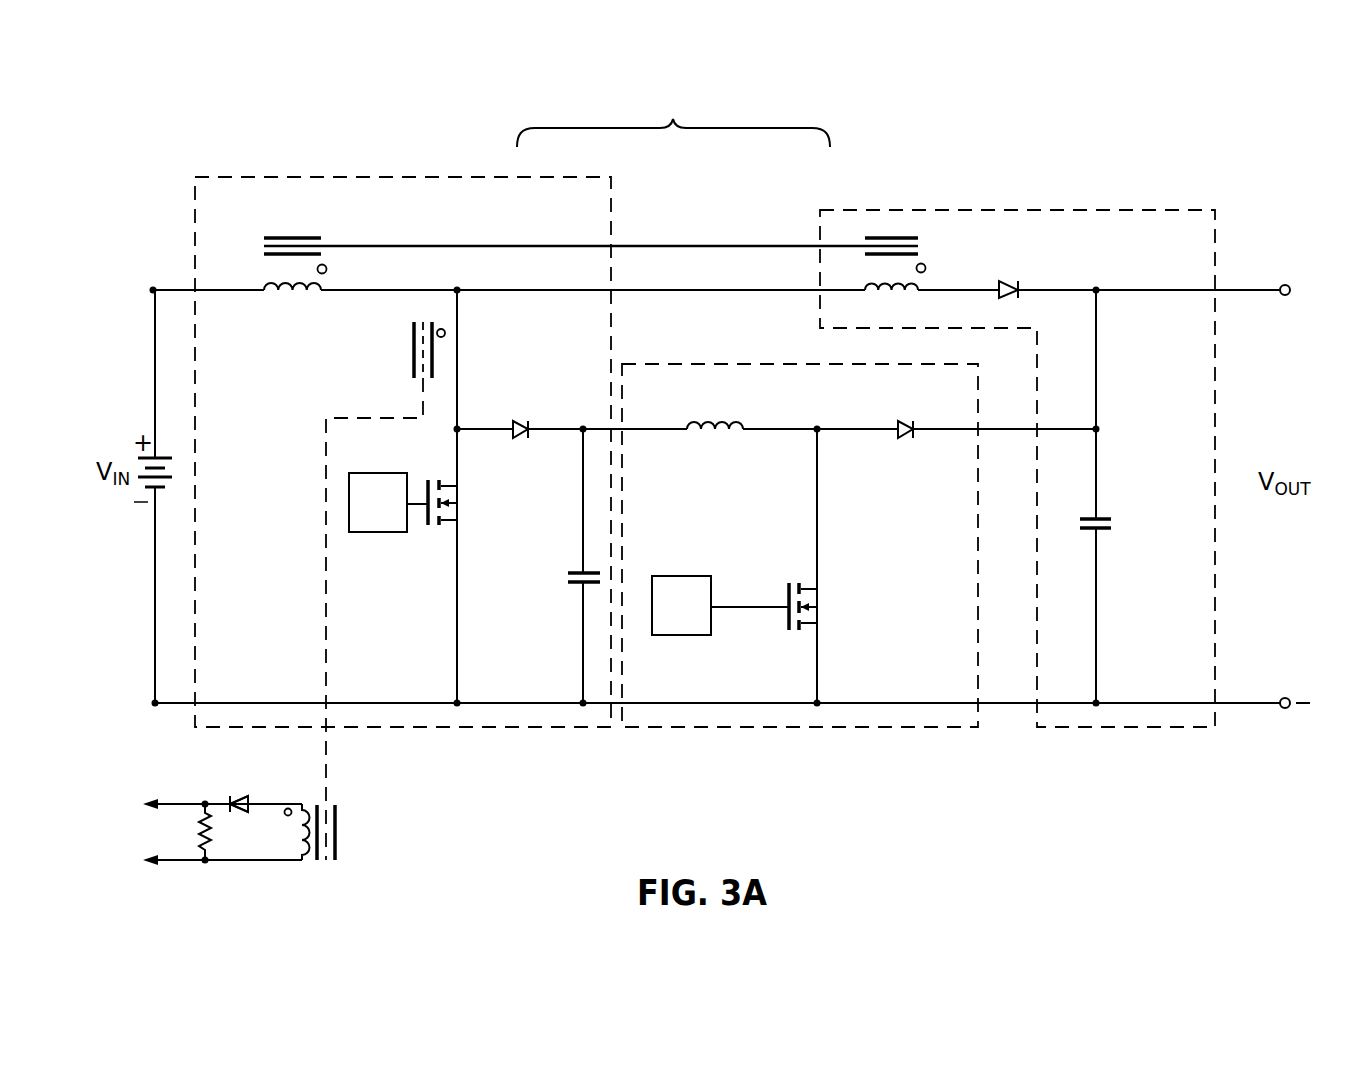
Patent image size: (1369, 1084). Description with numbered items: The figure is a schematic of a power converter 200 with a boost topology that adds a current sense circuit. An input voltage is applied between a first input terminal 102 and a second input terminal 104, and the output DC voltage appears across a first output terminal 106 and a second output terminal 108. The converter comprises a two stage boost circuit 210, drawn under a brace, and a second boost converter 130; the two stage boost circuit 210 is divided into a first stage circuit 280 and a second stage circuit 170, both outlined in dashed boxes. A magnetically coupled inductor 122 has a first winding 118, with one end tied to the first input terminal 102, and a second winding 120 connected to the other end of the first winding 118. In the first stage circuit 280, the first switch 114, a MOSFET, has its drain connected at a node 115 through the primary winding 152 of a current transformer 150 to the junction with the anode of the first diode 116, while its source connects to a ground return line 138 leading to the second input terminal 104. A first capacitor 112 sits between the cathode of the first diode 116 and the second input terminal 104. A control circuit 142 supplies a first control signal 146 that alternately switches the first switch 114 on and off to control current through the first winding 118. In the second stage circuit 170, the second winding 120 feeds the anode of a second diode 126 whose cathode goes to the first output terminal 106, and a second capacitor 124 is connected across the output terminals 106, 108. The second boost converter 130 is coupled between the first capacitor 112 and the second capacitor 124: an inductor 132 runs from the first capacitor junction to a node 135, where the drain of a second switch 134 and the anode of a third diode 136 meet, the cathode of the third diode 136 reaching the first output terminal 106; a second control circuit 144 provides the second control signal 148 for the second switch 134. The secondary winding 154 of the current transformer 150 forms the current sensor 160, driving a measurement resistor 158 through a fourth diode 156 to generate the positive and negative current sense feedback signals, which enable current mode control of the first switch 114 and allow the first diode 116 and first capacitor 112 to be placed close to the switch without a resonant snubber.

The first input terminal 102 is at (150, 290).
The second input terminal 104 is at (152, 703).
The first output terminal 106 is at (1284, 284).
The second output terminal 108 is at (1284, 698).
The first capacitor 112 is at (577, 572).
The first switch 114 is at (462, 501).
The node 115 is at (456, 286).
The first diode 116 is at (522, 422).
The first winding 118 is at (300, 295).
The second winding 120 is at (928, 284).
The magnetically coupled inductor 122 is at (365, 246).
The second capacitor 124 is at (1100, 517).
The second diode 126 is at (1024, 285).
The second boost converter 130 is at (770, 728).
The inductor 132 is at (713, 436).
The second switch 134 is at (820, 607).
The node 135 is at (816, 425).
The third diode 136 is at (905, 420).
The ground return line 138 is at (455, 701).
The control circuit 142 is at (370, 473).
The second control circuit 144 is at (672, 576).
The first control signal 146 is at (414, 500).
The second control signal 148 is at (754, 606).
The current transformer 150 is at (326, 864).
The primary winding 152 is at (448, 356).
The secondary winding 154 is at (292, 838).
The fourth diode 156 is at (250, 798).
The measurement resistor 158 is at (199, 832).
The current sensor 160 is at (246, 862).
The second stage circuit 170 is at (822, 210).
The power converter 200 is at (166, 140).
The two stage boost circuit 210 is at (673, 117).
The first stage circuit 280 is at (482, 177).